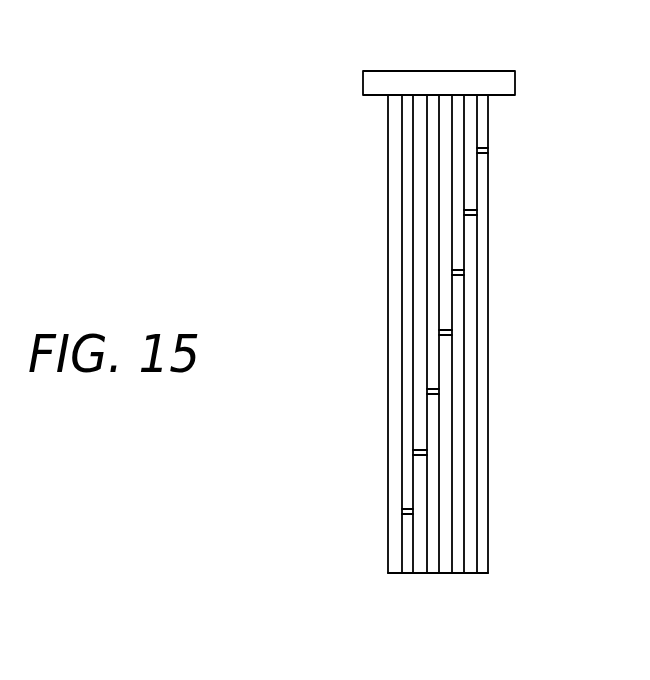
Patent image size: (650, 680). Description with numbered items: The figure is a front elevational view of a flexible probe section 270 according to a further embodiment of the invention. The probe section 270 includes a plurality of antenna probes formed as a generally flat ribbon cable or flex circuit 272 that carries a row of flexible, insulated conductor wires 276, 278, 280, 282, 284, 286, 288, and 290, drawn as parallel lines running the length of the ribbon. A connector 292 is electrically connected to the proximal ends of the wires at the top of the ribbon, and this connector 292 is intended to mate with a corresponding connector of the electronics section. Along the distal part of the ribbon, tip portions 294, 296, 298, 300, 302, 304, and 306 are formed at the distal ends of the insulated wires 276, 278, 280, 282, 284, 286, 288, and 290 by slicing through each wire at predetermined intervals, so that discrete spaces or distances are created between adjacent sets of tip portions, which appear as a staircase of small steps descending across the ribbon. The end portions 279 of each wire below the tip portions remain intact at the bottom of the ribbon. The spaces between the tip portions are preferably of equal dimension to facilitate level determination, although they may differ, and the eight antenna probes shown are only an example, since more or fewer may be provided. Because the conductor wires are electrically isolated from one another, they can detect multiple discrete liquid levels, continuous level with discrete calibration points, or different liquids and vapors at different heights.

The flexible probe section 270 is at (310, 175).
The flex circuit 272 is at (385, 237).
The insulated conductor wire 276 is at (394, 554).
The insulated conductor wire 278 is at (410, 556).
The end portions 279 is at (395, 573).
The insulated conductor wire 280 is at (422, 498).
The insulated conductor wire 282 is at (432, 463).
The insulated conductor wire 284 is at (443, 415).
The insulated conductor wire 286 is at (458, 363).
The insulated conductor wire 288 is at (470, 315).
The insulated conductor wire 290 is at (483, 265).
The connector 292 is at (428, 85).
The tip portion 294 is at (404, 511).
The tip portion 296 is at (414, 452).
The tip portion 298 is at (427, 392).
The tip portion 300 is at (438, 332).
The tip portion 302 is at (451, 271).
The tip portion 304 is at (476, 206).
The tip portion 306 is at (482, 150).